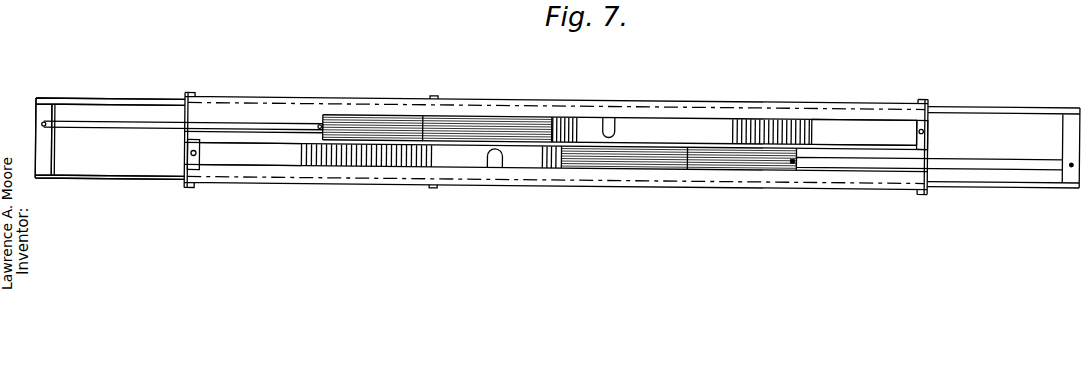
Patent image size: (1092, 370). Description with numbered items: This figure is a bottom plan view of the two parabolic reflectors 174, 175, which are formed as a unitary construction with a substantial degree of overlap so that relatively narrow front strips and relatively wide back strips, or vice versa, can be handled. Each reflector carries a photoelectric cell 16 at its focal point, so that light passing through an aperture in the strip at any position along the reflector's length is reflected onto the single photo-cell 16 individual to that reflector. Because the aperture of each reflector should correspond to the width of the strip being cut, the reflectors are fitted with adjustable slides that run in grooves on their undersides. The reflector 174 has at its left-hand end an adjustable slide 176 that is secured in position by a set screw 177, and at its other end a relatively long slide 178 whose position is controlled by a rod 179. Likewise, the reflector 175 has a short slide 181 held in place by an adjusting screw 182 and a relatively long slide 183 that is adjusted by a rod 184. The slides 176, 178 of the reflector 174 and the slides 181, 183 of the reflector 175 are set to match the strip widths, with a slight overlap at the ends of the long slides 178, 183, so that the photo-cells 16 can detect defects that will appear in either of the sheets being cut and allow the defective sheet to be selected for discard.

The photoelectric cell 16 is at (613, 125).
The parabolic reflector 174 is at (414, 157).
The parabolic reflector 175 is at (742, 124).
The adjustable slide 176 is at (258, 155).
The set screw 177 is at (188, 153).
The long slide 178 is at (758, 157).
The rod 179 is at (1000, 162).
The short slide 181 is at (852, 126).
The adjusting screw 182 is at (926, 132).
The long slide 183 is at (375, 124).
The rod 184 is at (96, 151).